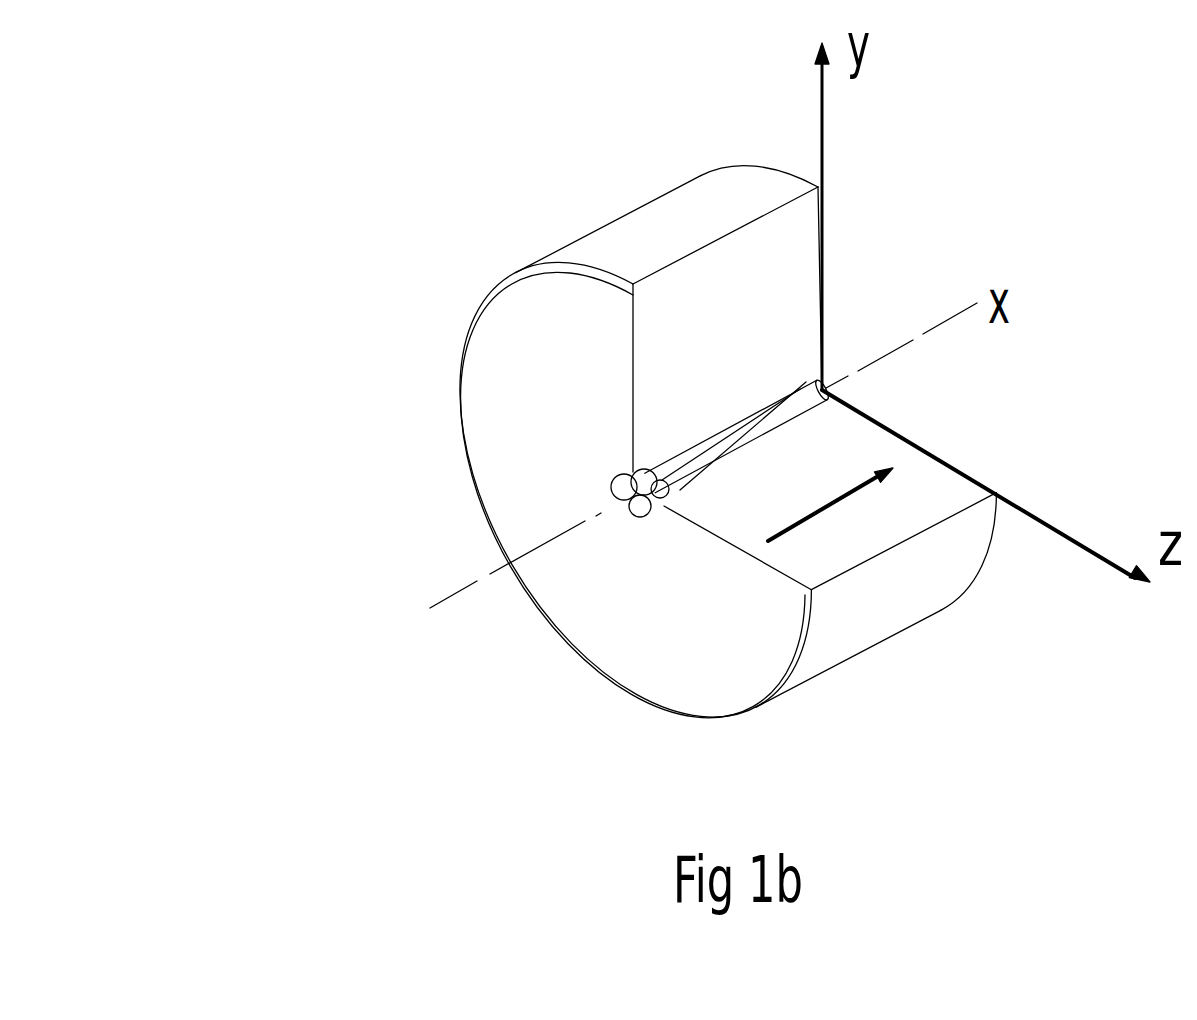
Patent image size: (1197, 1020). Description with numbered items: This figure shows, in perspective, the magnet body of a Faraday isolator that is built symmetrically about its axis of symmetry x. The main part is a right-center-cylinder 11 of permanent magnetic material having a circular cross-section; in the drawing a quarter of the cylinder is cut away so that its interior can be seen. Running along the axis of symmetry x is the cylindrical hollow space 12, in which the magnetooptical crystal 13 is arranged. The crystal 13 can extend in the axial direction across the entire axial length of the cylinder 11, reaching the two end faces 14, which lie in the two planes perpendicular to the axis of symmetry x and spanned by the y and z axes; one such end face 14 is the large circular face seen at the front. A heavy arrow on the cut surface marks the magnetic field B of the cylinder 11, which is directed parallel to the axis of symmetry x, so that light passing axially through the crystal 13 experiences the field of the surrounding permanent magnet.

The right-center-cylinder 11 is at (622, 212).
The cylindrical hollow space 12 is at (628, 489).
The magnetooptical crystal 13 is at (785, 435).
The end faces 14 is at (530, 388).
The magnetic field B is at (832, 510).